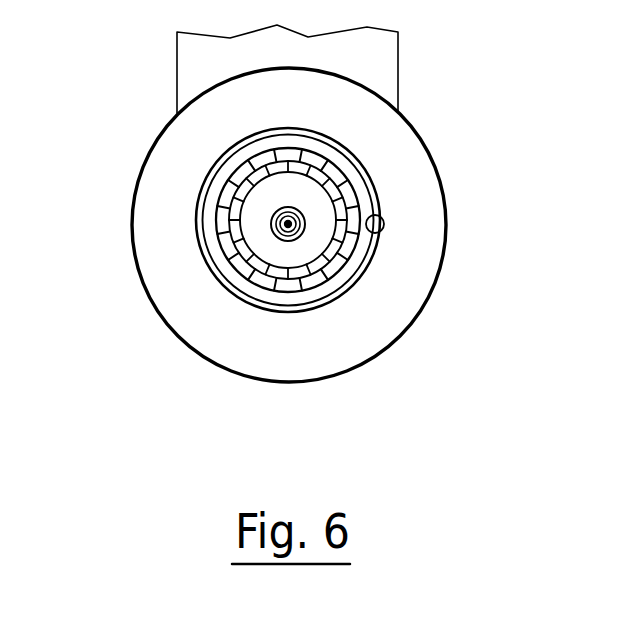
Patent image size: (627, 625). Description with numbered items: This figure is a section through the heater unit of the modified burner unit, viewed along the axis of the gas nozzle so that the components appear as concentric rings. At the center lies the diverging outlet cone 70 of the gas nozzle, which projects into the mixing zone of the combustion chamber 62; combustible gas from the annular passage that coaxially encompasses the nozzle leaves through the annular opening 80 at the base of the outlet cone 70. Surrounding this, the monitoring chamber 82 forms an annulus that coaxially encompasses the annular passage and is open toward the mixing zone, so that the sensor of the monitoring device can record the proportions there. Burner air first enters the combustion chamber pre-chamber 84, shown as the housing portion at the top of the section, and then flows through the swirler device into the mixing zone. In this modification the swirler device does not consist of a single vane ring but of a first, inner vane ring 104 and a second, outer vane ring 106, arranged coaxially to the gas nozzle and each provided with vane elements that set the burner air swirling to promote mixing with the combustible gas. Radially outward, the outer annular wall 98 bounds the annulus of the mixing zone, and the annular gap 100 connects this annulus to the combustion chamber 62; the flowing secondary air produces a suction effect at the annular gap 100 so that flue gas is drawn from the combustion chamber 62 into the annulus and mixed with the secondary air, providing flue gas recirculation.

The combustion chamber 62 is at (160, 318).
The outlet cone 70 is at (277, 209).
The annular opening 80 is at (268, 221).
The monitoring chamber 82 is at (270, 252).
The combustion chamber pre-chamber 84 is at (198, 50).
The outer annular wall 98 is at (365, 181).
The annular gap 100 is at (386, 226).
The first, inner vane ring 104 is at (311, 284).
The second, outer vane ring 106 is at (356, 265).